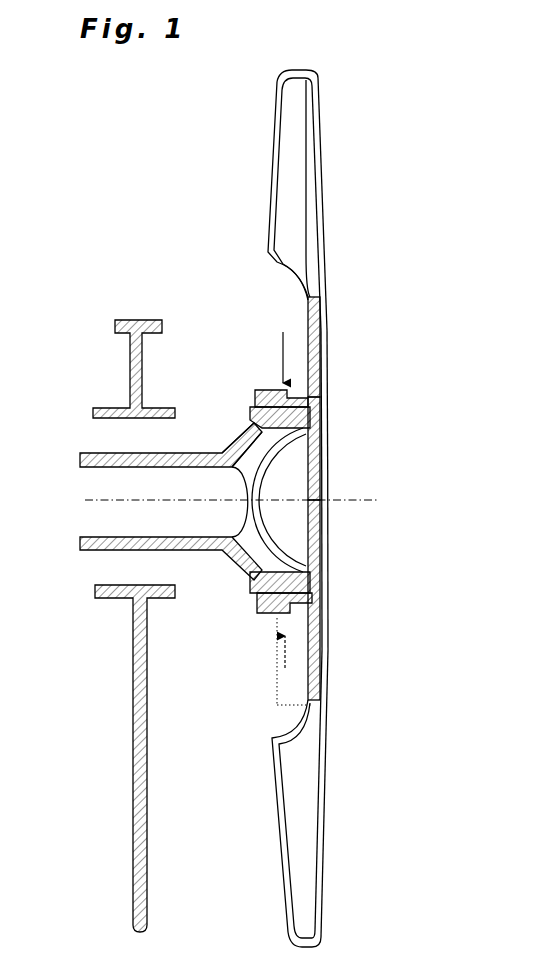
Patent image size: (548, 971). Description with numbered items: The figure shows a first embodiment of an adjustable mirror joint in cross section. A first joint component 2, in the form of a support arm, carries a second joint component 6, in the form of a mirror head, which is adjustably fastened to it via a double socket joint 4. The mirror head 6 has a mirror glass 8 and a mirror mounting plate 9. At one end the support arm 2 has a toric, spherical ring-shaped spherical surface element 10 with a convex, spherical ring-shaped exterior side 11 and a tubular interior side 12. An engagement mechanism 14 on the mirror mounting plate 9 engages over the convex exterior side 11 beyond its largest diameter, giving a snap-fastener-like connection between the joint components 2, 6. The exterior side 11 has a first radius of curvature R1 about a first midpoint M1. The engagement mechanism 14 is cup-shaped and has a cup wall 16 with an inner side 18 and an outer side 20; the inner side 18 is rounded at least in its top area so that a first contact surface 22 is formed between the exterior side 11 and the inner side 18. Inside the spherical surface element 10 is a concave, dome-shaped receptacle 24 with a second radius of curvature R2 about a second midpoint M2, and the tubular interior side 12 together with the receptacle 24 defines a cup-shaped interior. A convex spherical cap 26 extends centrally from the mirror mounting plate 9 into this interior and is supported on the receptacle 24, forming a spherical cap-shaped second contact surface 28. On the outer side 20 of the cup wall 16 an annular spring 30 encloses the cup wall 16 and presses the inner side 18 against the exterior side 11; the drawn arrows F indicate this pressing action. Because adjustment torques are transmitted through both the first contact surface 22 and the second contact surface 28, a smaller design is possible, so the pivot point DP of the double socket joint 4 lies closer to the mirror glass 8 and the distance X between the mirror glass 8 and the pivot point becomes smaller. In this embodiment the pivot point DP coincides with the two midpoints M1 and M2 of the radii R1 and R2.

The first joint component 2 is at (100, 452).
The double socket joint 4 is at (226, 440).
The second joint component 6 is at (331, 80).
The mirror glass 8 is at (330, 237).
The mirror mounting plate 9 is at (268, 183).
The spherical surface element 10 is at (330, 570).
The convex exterior side 11 is at (335, 600).
The tubular interior side 12 is at (330, 547).
The engagement mechanism 14 is at (333, 410).
The cup wall 16 is at (364, 443).
The inner side 18 is at (333, 448).
The outer side 20 is at (258, 407).
The first contact surface 22 is at (333, 383).
The receptacle 24 is at (219, 502).
The convex spherical cap 26 is at (333, 477).
The second contact surface 28 is at (333, 512).
The annular spring 30 is at (272, 392).
The first radius of curvature R1 is at (226, 432).
The second radius of curvature R2 is at (246, 497).
The pivot point DP is at (234, 612).
The first midpoint M1 is at (234, 612).
The second midpoint M2 is at (247, 572).
The force F is at (290, 500).
The distance X is at (294, 661).